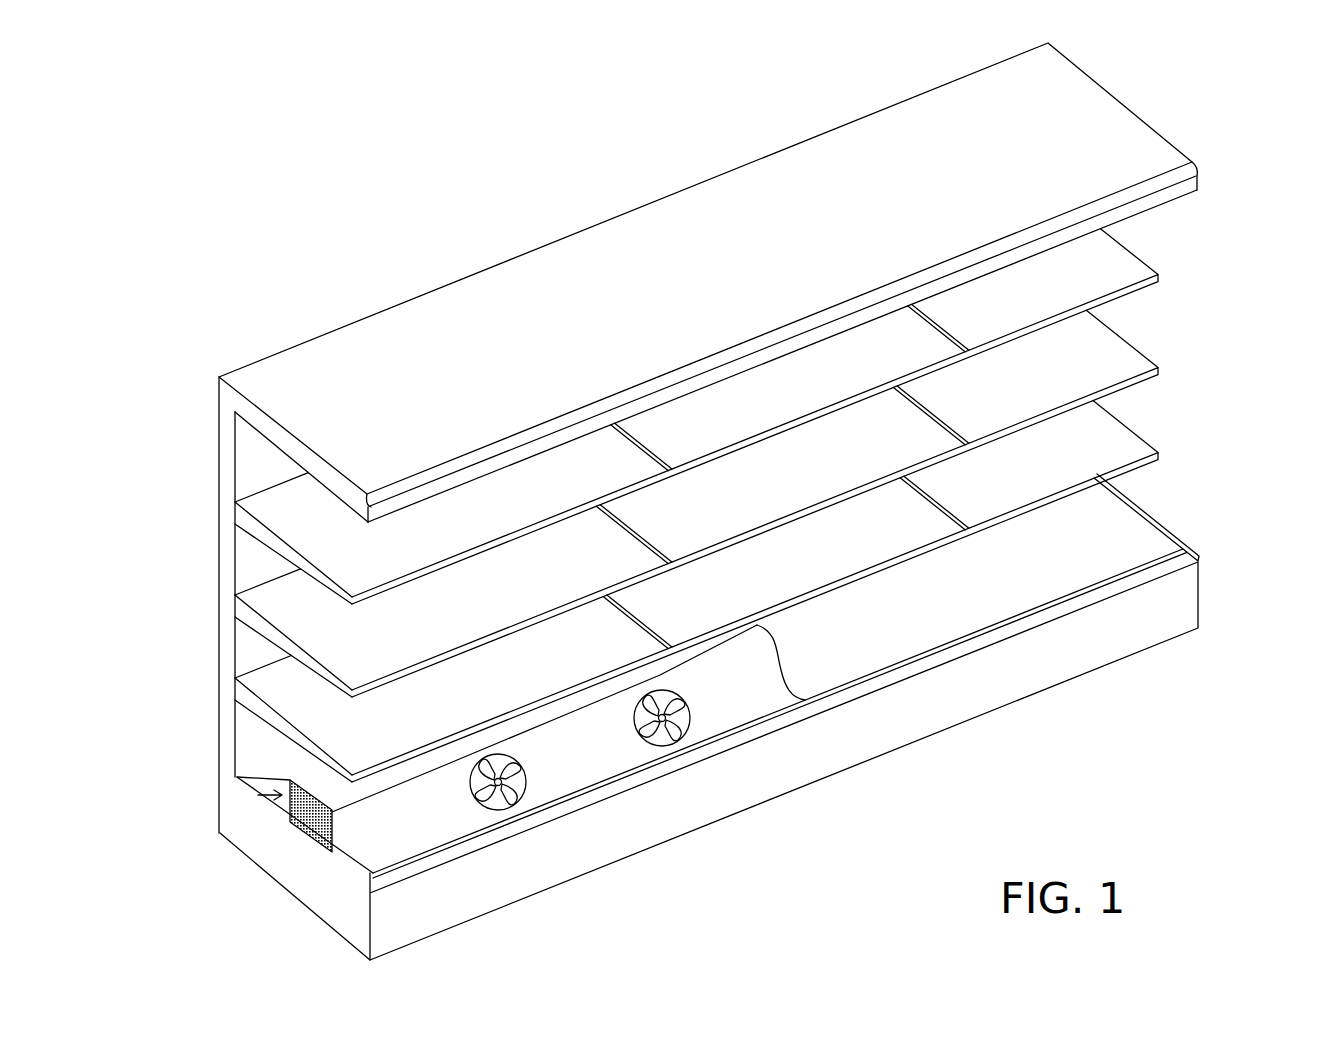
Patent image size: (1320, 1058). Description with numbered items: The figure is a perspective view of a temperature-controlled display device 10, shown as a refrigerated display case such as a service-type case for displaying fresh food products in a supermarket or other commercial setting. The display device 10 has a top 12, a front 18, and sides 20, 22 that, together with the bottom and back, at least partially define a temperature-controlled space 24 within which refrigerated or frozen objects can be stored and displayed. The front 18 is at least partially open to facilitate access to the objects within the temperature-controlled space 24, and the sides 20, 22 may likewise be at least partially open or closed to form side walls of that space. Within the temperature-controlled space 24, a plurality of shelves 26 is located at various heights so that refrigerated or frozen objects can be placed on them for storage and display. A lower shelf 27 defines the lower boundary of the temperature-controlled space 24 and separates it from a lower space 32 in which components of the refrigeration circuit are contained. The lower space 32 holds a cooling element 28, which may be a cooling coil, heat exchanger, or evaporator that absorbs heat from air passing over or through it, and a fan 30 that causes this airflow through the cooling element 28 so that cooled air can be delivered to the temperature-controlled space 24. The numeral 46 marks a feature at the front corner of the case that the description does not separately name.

The temperature-controlled display device 10 is at (197, 267).
The top 12 is at (518, 268).
The front 18 is at (970, 710).
The side 20 is at (285, 870).
The side 22 is at (1137, 502).
The temperature-controlled space 24 is at (260, 570).
The shelves 26 is at (1128, 268).
The shelf 27 is at (1137, 530).
The cooling element 28 is at (290, 822).
The fan 30 is at (522, 772).
The lower space 32 is at (256, 797).
The corner 46 is at (1177, 558).